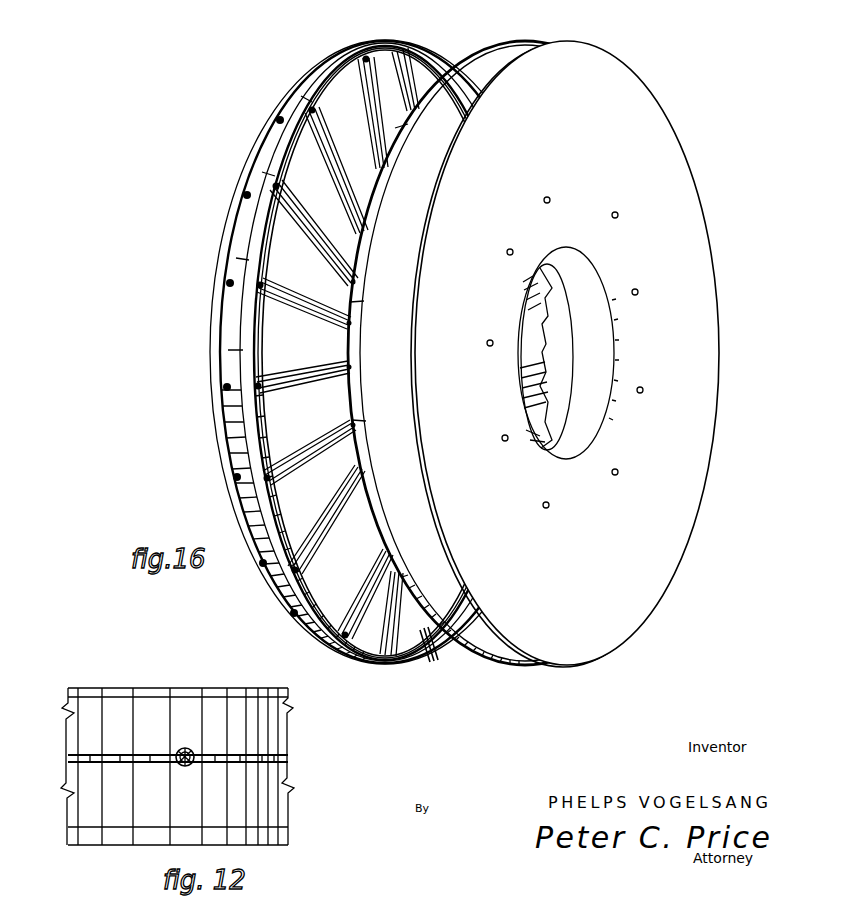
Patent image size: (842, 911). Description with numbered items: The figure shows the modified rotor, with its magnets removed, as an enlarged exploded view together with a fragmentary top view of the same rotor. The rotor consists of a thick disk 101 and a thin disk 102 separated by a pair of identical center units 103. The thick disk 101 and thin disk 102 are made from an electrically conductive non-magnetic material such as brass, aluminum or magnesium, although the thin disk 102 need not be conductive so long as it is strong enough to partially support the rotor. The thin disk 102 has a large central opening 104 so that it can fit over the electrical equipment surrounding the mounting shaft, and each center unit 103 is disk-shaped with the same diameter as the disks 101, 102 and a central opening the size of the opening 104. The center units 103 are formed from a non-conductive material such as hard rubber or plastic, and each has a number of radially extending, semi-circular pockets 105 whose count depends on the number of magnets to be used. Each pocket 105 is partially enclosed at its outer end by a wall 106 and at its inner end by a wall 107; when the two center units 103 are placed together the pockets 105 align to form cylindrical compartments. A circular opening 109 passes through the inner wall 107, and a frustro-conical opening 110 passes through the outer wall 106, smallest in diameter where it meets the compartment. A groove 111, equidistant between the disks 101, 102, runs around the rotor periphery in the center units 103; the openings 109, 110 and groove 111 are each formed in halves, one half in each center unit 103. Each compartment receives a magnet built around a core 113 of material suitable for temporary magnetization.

In FIG. 16, the thick disk 101 is at (272, 113).
In FIG. 12, the thick disk 101 is at (75, 845).
In FIG. 16, the thin disk 102 is at (660, 553).
In FIG. 12, the thin disk 102 is at (95, 693).
In FIG. 16, the center unit 103 is at (317, 90).
In FIG. 12, the center unit 103 is at (74, 728).
In FIG. 16, the central opening 104 is at (619, 427).
In FIG. 16, the pocket 105 is at (325, 173).
In FIG. 16, the wall 106 is at (280, 187).
In FIG. 16, the wall 107 is at (547, 313).
In FIG. 16, the circular opening 109 is at (550, 367).
In FIG. 16, the opening 110 is at (258, 387).
In FIG. 12, the opening 110 is at (190, 750).
In FIG. 16, the groove 111 is at (383, 44).
In FIG. 12, the groove 111 is at (262, 754).
In FIG. 12, the core 113 is at (182, 750).